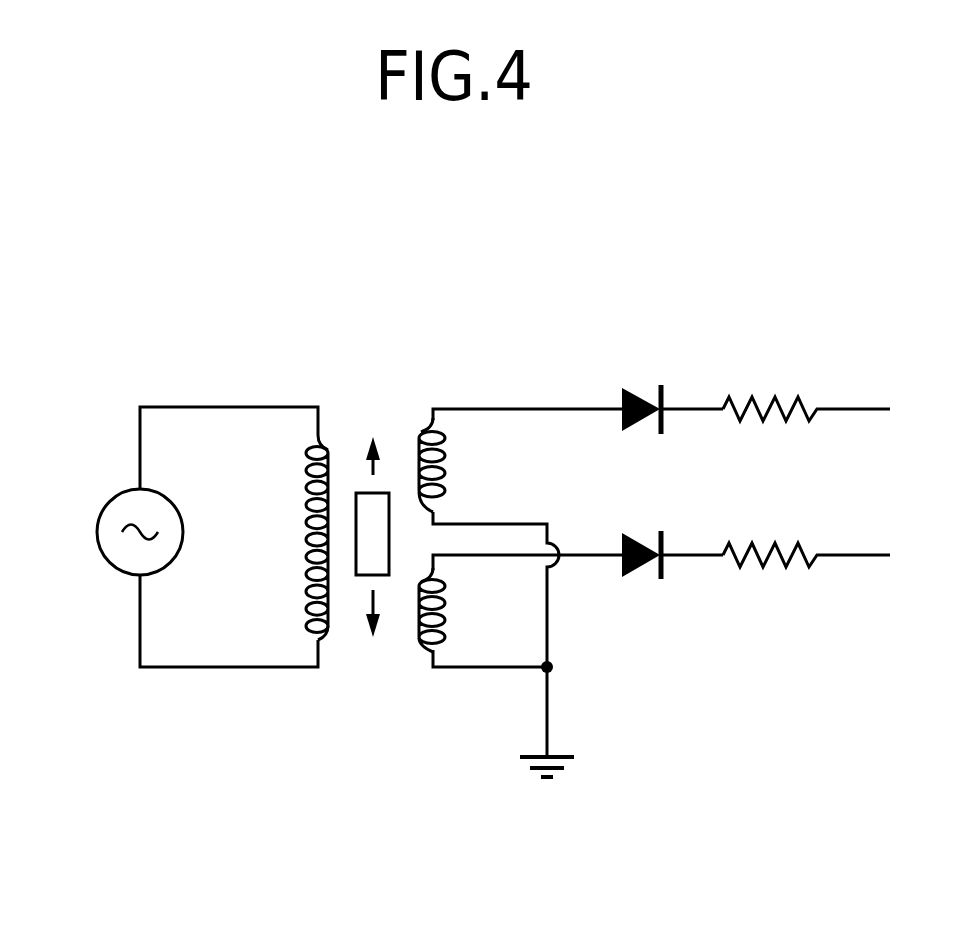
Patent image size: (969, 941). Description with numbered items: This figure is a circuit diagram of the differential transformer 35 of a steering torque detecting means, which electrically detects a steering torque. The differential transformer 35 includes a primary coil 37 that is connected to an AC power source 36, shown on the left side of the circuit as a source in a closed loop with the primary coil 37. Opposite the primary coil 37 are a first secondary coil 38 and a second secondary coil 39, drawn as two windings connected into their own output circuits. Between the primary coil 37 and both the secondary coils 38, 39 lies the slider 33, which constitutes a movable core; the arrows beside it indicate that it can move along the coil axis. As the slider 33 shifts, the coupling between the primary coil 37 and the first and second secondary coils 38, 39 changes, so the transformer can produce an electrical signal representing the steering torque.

The slider 33 is at (379, 505).
The differential transformer 35 is at (388, 438).
The AC power source 36 is at (107, 558).
The primary coil 37 is at (310, 522).
The first secondary coil 38 is at (445, 455).
The second secondary coil 39 is at (443, 613).